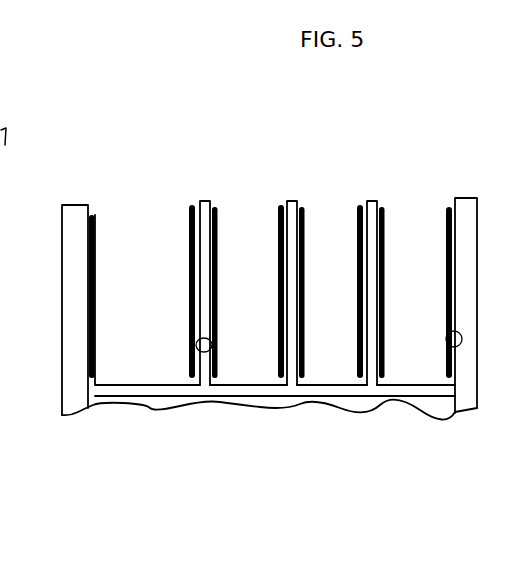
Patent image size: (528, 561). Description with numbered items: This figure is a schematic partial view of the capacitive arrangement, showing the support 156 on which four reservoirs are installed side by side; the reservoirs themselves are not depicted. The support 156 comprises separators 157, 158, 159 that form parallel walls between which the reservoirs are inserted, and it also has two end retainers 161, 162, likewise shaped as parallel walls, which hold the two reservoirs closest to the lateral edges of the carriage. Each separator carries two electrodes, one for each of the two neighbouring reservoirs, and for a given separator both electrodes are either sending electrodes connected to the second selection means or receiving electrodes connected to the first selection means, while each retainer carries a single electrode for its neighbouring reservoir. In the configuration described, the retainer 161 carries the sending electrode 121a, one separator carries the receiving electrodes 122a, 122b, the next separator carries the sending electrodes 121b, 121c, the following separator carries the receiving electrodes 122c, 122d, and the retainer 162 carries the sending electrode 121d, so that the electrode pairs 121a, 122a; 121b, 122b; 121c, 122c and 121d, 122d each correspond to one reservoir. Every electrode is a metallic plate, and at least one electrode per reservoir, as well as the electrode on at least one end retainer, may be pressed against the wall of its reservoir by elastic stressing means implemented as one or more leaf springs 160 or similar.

The support 156 is at (229, 399).
The separator 157 is at (207, 205).
The separator 158 is at (295, 202).
The separator 159 is at (373, 202).
The leaf spring 160 is at (196, 345).
The end retainer 161 is at (75, 212).
The end retainer 162 is at (468, 205).
The sending electrode 121a is at (95, 286).
The sending electrode 121b is at (278, 312).
The sending electrode 121c is at (327, 317).
The sending electrode 121d is at (447, 277).
The receiving electrode 122a is at (195, 258).
The receiving electrode 122b is at (217, 257).
The receiving electrode 122c is at (357, 258).
The receiving electrode 122d is at (384, 257).